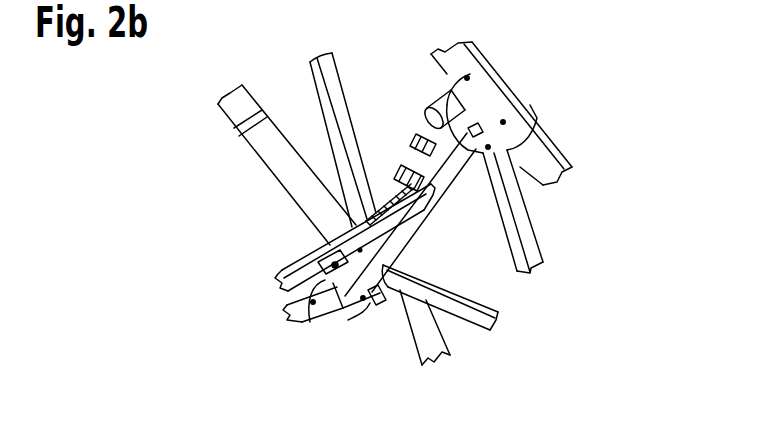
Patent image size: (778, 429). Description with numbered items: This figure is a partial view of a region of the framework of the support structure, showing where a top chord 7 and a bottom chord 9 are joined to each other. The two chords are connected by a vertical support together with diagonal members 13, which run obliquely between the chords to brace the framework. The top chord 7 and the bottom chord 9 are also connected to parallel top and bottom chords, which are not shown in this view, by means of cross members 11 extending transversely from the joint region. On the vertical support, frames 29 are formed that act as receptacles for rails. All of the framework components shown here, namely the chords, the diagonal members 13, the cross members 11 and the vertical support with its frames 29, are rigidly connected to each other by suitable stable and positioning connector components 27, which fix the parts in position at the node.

The top chord 7 is at (550, 150).
The bottom chord 9 is at (414, 337).
The cross members 11 is at (283, 266).
The diagonal members 13 is at (318, 84).
The connector components 27 is at (467, 78).
The frames 29 is at (383, 178).